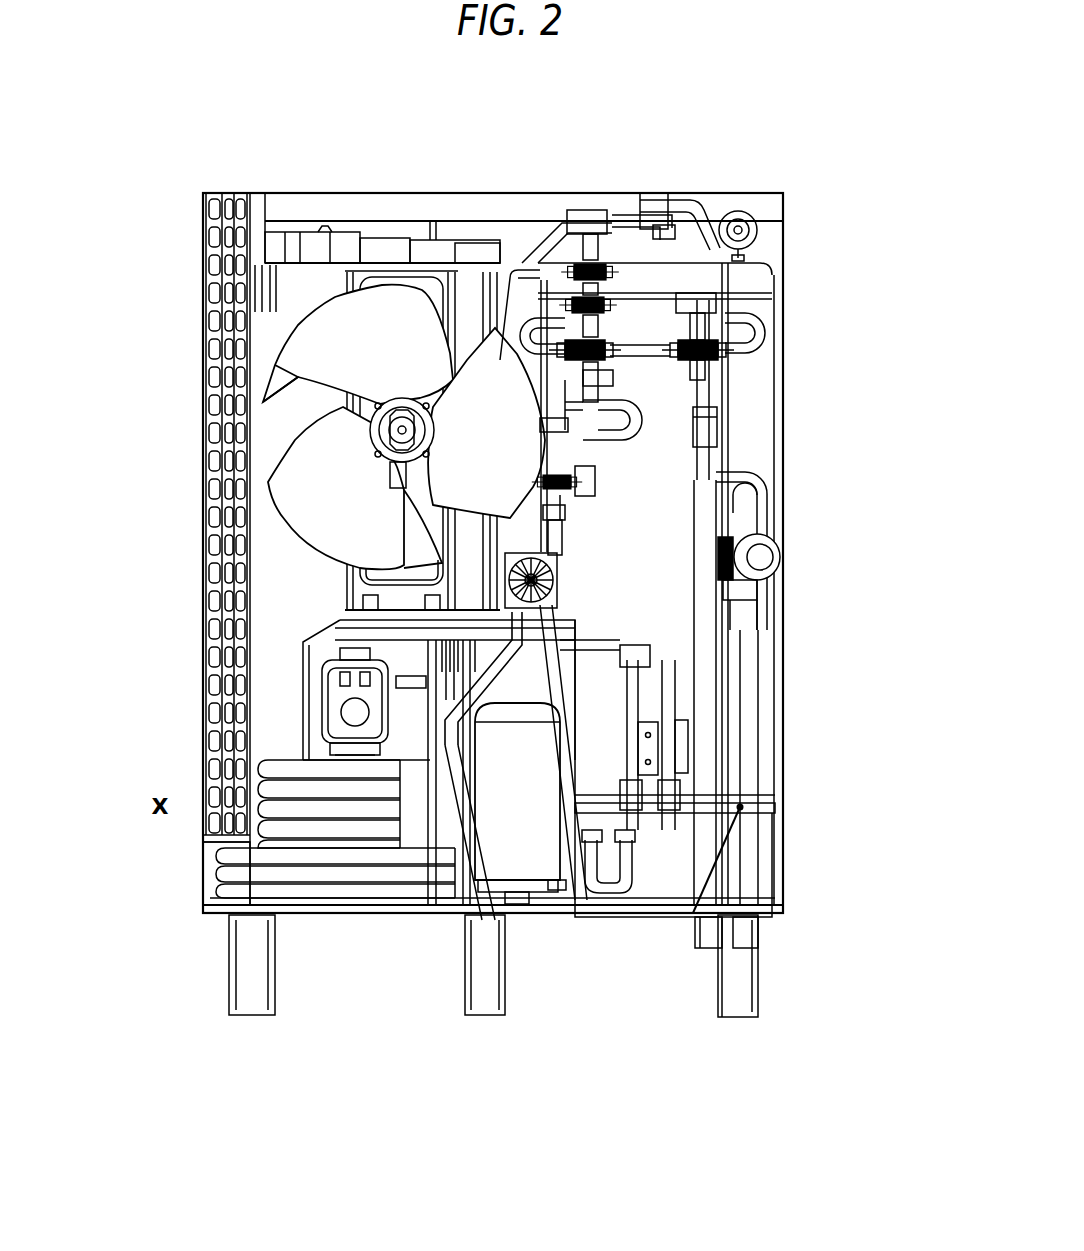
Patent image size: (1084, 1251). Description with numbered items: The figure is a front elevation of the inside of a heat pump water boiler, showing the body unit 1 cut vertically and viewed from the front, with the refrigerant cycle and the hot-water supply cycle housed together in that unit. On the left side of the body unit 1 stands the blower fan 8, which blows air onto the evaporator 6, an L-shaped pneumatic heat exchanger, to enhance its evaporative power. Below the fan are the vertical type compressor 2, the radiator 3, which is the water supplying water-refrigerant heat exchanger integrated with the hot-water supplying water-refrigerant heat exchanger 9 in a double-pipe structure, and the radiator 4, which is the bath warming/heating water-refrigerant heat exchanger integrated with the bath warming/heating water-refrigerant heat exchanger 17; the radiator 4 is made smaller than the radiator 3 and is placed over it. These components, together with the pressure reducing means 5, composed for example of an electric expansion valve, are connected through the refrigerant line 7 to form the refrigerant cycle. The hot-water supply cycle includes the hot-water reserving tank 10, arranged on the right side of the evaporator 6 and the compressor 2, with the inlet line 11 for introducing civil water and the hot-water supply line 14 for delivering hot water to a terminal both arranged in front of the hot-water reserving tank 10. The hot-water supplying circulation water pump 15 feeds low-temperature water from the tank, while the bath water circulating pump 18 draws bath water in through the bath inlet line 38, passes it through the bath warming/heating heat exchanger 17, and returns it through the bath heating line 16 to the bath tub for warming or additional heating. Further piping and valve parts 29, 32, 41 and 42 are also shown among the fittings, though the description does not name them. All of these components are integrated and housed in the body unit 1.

The body unit 1 is at (690, 195).
The vertical type compressor 2 is at (492, 818).
The water supplying water-refrigerant heat exchanger 3 is at (229, 851).
The hot-water supplying water-refrigerant heat exchanger 9 is at (262, 901).
The bath warming/heating water-refrigerant heat exchanger 4 is at (345, 780).
The bath warming/heating water-refrigerant heat exchanger 17 is at (329, 898).
The pressure reducing means 5 is at (400, 682).
The evaporator 6 is at (213, 455).
The refrigerant line 7 is at (470, 870).
The blower fan 8 is at (323, 508).
The hot-water reserving tank 10 is at (648, 423).
The inlet line 11 is at (747, 925).
The hot-water supply line 14 is at (722, 920).
The hot-water supplying circulation water pump 15 is at (562, 600).
The bath heating line 16 is at (652, 913).
The bath water circulating pump 18 is at (352, 710).
The pipe 29 is at (735, 362).
The valve 32 is at (600, 478).
The bath inlet line 38 is at (710, 930).
The base plate 41 is at (223, 903).
The valve bracket 42 is at (623, 907).